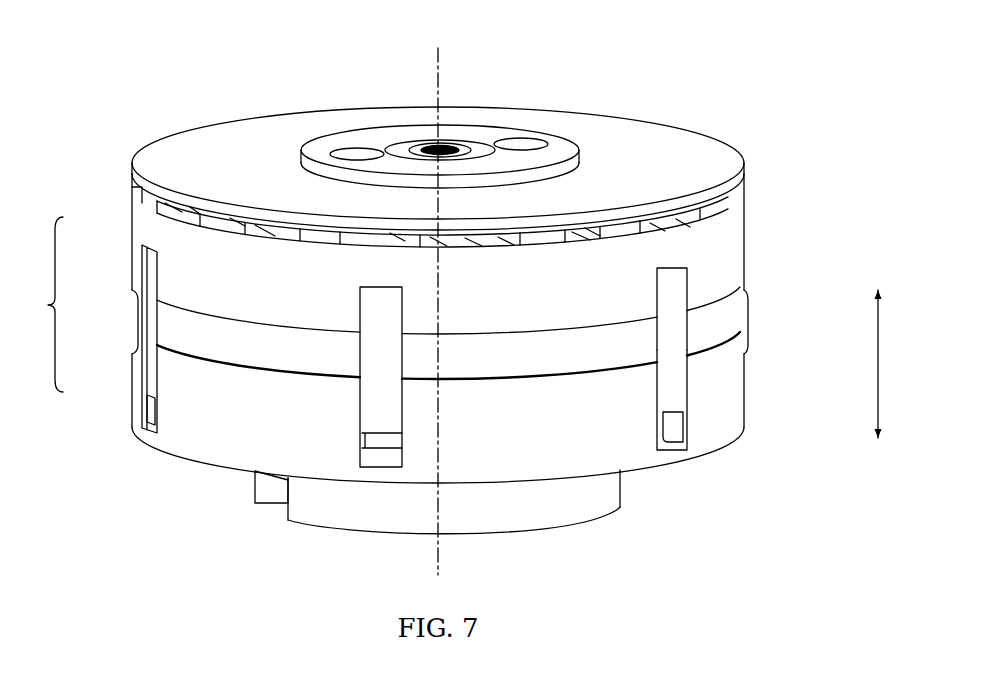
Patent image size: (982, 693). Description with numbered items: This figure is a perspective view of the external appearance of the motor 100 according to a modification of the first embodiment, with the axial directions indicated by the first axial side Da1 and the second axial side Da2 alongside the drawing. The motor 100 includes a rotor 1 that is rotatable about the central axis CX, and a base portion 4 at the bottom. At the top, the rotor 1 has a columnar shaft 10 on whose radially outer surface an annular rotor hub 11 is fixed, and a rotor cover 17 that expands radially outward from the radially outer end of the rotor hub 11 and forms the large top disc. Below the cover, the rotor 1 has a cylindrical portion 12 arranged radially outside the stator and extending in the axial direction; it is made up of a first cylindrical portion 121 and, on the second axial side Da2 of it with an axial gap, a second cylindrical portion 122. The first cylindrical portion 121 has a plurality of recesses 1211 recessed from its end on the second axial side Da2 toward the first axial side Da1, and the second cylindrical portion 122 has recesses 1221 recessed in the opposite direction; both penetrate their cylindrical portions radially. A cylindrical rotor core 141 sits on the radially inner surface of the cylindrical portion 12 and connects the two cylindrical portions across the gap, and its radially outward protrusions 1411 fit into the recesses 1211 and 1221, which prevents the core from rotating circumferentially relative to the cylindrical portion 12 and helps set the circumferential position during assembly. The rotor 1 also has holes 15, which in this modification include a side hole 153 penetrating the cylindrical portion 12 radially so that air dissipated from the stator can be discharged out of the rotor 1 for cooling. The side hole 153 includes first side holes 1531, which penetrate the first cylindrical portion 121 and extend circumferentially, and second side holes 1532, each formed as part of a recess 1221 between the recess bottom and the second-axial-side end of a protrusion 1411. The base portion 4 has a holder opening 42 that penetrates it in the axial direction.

The motor 100 is at (284, 89).
The rotor 1 is at (174, 130).
The shaft 10 is at (430, 146).
The rotor hub 11 is at (478, 147).
The cylindrical portion 12 is at (423, 328).
The first cylindrical portion 121 is at (148, 234).
The second cylindrical portion 122 is at (147, 382).
The recess 1211 is at (689, 292).
The recess 1221 is at (689, 383).
The rotor core 141 is at (727, 309).
The protrusion 1411 is at (684, 337).
The hole 15 is at (243, 211).
The side hole 153 is at (441, 252).
The first side hole 1531 is at (262, 229).
The second side hole 1532 is at (685, 428).
The rotor cover 17 is at (626, 146).
The base portion 4 is at (568, 513).
The holder opening 42 is at (277, 498).
The central axis CX is at (440, 298).
The first axial side Da1 is at (878, 349).
The second axial side Da2 is at (878, 461).